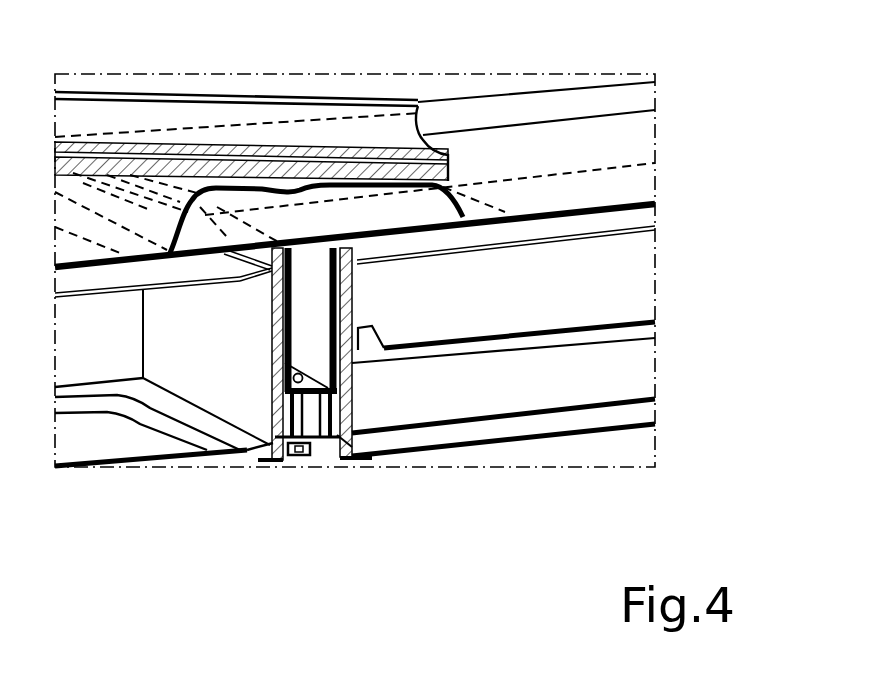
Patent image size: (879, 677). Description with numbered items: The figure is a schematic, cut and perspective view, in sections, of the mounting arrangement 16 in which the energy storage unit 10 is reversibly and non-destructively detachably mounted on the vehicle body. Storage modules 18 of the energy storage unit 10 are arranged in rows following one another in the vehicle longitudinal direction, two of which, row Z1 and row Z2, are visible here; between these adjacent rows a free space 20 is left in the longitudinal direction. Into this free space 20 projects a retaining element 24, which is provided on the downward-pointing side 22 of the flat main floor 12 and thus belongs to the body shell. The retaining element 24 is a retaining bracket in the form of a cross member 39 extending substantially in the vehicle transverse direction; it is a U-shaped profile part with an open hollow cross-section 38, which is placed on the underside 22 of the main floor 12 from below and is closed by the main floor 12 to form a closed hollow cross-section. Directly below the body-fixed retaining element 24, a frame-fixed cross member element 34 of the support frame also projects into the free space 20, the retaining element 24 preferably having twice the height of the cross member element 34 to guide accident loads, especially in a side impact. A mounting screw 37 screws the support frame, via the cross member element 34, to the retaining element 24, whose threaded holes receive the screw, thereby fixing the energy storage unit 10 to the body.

The energy storage unit 10 is at (668, 438).
The main floor 12 is at (540, 200).
The mounting arrangement 16 is at (616, 450).
The storage module 18 is at (173, 478).
The free space 20 is at (353, 316).
The side (underside) of the main floor 22 is at (597, 214).
The retaining element 24 is at (485, 362).
The cross member 39 is at (315, 355).
The cross member element 34 is at (317, 447).
The mounting screw 37 is at (305, 456).
The open hollow cross-section 38 is at (305, 304).
The row Z1 is at (184, 572).
The row Z2 is at (532, 532).